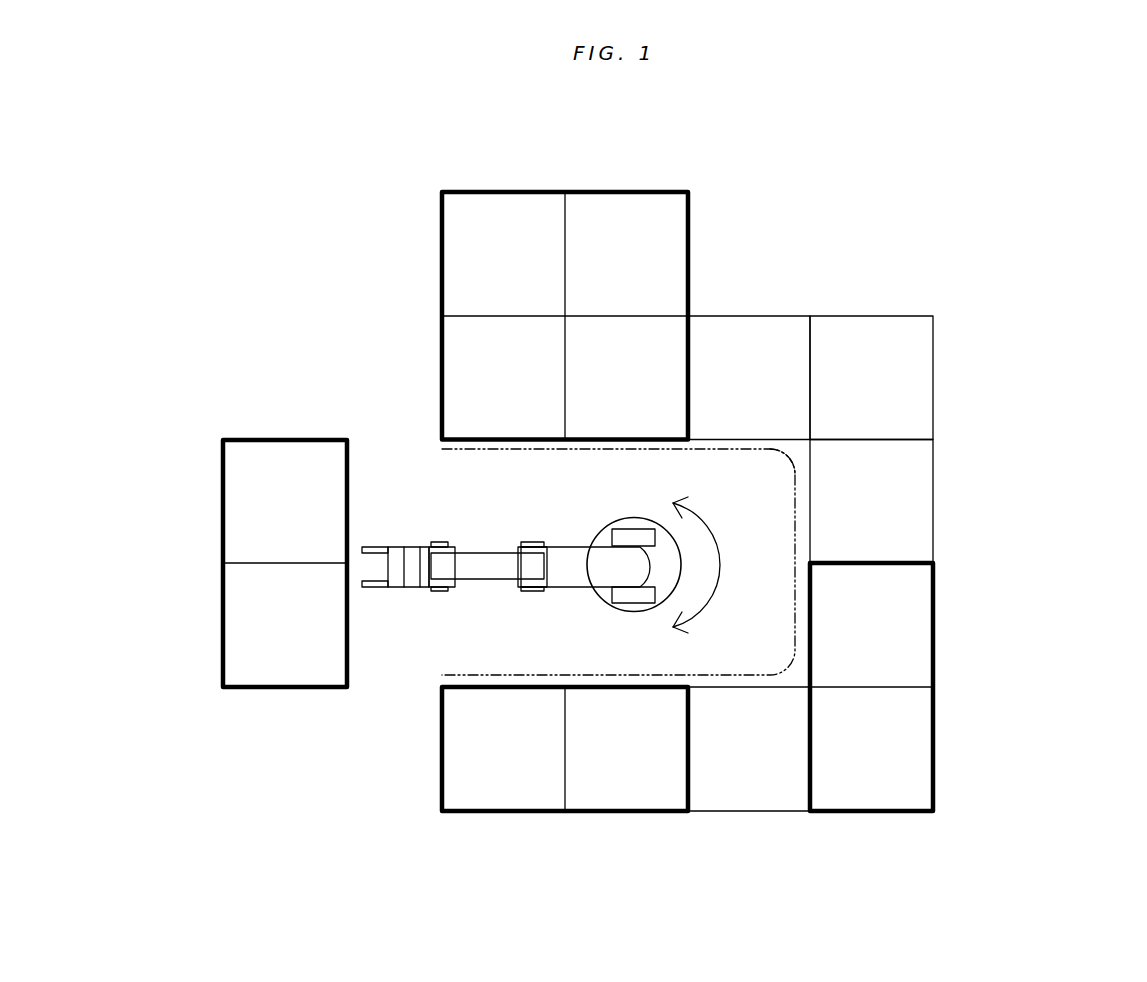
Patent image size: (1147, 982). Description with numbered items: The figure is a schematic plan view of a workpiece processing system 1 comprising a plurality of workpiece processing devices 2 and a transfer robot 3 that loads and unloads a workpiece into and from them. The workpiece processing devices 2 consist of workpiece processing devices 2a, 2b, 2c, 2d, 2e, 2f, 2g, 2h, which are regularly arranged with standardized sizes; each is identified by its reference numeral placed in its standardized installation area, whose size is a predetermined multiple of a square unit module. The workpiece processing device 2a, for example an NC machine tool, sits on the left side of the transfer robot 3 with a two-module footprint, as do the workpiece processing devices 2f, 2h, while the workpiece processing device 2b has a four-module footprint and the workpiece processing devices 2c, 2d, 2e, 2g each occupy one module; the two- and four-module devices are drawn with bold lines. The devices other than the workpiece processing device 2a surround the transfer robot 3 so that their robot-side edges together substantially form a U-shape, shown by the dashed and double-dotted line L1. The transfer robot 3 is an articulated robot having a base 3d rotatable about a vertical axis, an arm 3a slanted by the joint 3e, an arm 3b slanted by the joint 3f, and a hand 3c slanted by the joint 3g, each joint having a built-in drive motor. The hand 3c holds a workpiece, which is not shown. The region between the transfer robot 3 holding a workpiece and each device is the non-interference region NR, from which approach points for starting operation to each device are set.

The workpiece processing system 1 is at (868, 131).
The workpiece processing devices 2 is at (1052, 435).
The workpiece processing device 2a is at (223, 565).
The workpiece processing device 2b is at (568, 190).
The workpiece processing device 2c is at (748, 316).
The workpiece processing device 2d is at (933, 373).
The workpiece processing device 2e is at (933, 498).
The workpiece processing device 2f is at (934, 683).
The workpiece processing device 2g is at (752, 811).
The workpiece processing device 2h is at (561, 811).
The transfer robot 3 is at (410, 670).
The arm 3a is at (567, 547).
The arm 3b is at (478, 553).
The hand 3c is at (370, 547).
The base 3d is at (633, 518).
The joint 3e is at (630, 603).
The joint 3f is at (533, 593).
The joint 3g is at (440, 593).
The non-interference region NR is at (467, 488).
The dashed and double-dotted line L1 is at (768, 452).